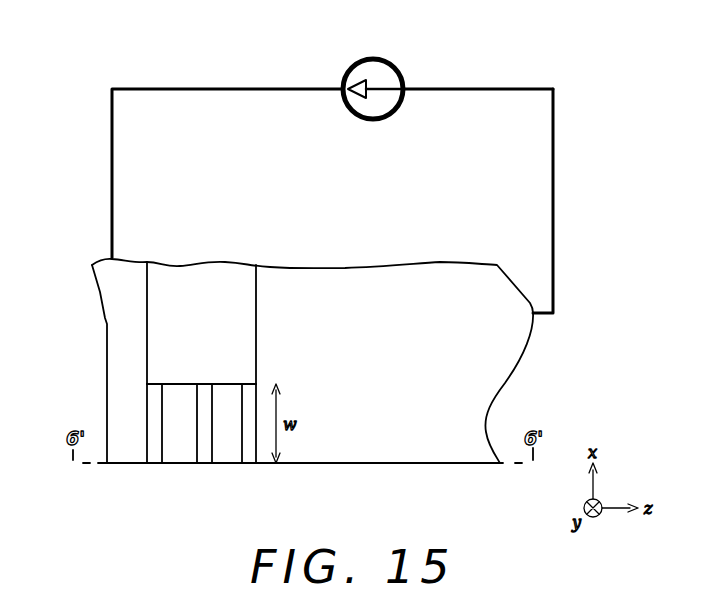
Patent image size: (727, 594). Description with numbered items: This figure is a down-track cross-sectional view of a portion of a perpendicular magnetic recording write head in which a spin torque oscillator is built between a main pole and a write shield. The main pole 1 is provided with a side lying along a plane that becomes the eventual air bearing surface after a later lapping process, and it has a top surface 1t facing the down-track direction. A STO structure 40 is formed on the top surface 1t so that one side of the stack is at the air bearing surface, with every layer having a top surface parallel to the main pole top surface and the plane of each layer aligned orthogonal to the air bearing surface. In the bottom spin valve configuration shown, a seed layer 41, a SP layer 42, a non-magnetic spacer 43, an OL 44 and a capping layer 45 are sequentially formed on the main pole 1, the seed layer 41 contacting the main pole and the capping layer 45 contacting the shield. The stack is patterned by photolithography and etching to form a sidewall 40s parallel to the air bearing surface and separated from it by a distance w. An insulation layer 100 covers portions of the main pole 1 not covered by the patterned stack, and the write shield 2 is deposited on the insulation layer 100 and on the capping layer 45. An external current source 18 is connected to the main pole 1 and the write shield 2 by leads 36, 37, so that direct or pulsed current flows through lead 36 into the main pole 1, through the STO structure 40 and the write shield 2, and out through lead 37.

The main pole 1 is at (107, 290).
The top surface of main pole 1t is at (147, 326).
The write shield 2 is at (482, 391).
The insulation layer 100 is at (215, 275).
The STO structure 40 is at (257, 497).
The sidewall 40s is at (182, 383).
The seed layer 41 is at (151, 455).
The SP layer 42 is at (177, 455).
The non-magnetic spacer 43 is at (202, 455).
The OL 44 is at (227, 455).
The capping layer 45 is at (252, 455).
The lead 36 is at (248, 88).
The lead 37 is at (553, 211).
The current source 18 is at (353, 66).